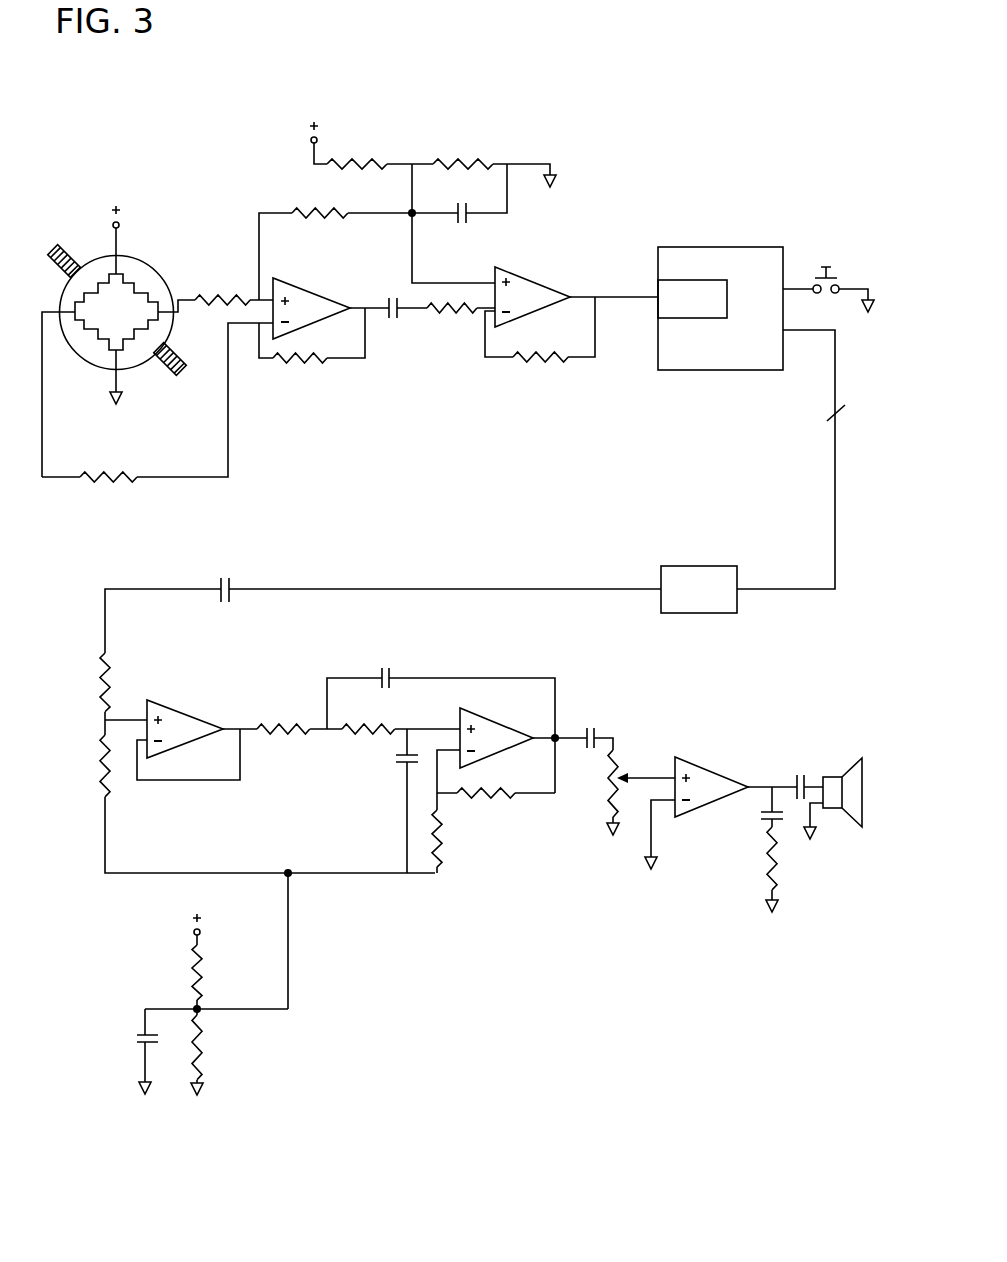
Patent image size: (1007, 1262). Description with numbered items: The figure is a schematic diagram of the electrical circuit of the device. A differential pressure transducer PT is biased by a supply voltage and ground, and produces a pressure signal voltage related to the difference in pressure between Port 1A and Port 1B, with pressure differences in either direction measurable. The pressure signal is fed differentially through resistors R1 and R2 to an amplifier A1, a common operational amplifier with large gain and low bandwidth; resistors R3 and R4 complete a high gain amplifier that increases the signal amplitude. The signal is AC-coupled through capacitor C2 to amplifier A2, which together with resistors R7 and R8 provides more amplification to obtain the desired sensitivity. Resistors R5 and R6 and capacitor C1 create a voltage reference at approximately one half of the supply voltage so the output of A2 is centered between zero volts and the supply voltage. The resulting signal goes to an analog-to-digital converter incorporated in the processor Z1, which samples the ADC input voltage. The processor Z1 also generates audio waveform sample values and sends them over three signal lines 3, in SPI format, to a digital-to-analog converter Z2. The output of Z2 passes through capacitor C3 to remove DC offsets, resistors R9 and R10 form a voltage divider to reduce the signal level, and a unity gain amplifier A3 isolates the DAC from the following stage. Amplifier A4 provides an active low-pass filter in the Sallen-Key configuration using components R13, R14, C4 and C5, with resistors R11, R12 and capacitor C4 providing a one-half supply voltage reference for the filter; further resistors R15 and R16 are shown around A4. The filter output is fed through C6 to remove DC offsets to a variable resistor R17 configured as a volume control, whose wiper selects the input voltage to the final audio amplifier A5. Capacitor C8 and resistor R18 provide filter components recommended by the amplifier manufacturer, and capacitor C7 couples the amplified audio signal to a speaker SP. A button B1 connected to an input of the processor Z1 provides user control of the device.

The differential pressure transducer PT is at (150, 262).
The port 1A is at (52, 251).
The port 1B is at (173, 375).
The resistor R1 is at (221, 290).
The resistor R2 is at (108, 488).
The resistor R3 is at (306, 208).
The resistor R4 is at (310, 368).
The resistor R5 is at (364, 153).
The resistor R6 is at (474, 153).
The resistor R7 is at (450, 322).
The resistor R8 is at (535, 368).
The resistor R9 is at (100, 690).
The resistor R10 is at (96, 770).
The resistor R11 is at (190, 965).
The resistor R12 is at (205, 1045).
The resistor R13 is at (280, 745).
The resistor R14 is at (366, 737).
The resistor R15 is at (444, 858).
The resistor R16 is at (484, 805).
The variable resistor R17 is at (605, 795).
The resistor R18 is at (765, 860).
The capacitor C1 is at (472, 220).
The capacitor C2 is at (395, 326).
The capacitor C3 is at (232, 575).
The capacitor C4 is at (378, 672).
The capacitor C5 is at (398, 772).
The capacitor C6 is at (598, 724).
The capacitor C7 is at (798, 770).
The capacitor C8 is at (760, 822).
The amplifier A1 is at (318, 292).
The amplifier A2 is at (548, 283).
The unity gain amplifier A3 is at (203, 715).
The amplifier A4 is at (490, 727).
The audio amplifier A5 is at (708, 763).
The processor Z1 is at (703, 245).
The Digital-to-Analog Converter Z2 is at (690, 565).
The button B1 is at (825, 266).
The signal lines 3 is at (845, 417).
The speaker SP is at (865, 782).